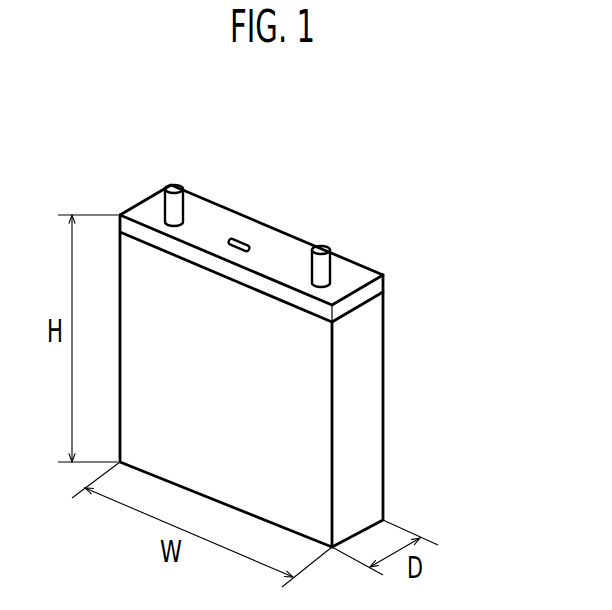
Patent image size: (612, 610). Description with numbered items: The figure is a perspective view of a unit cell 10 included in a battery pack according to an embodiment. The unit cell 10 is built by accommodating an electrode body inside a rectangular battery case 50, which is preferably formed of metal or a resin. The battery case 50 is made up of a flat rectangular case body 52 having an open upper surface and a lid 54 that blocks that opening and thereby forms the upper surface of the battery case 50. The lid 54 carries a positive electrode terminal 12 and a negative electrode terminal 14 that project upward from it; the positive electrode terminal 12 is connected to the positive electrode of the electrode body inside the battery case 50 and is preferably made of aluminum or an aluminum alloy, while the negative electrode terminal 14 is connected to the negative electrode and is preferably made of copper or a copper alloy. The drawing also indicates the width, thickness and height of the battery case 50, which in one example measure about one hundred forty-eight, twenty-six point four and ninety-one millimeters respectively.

The unit cell 10 is at (500, 148).
The positive electrode terminal 12 is at (322, 248).
The negative electrode terminal 14 is at (175, 186).
The battery case 50 is at (360, 407).
The case body 52 is at (373, 488).
The lid 54 is at (378, 288).